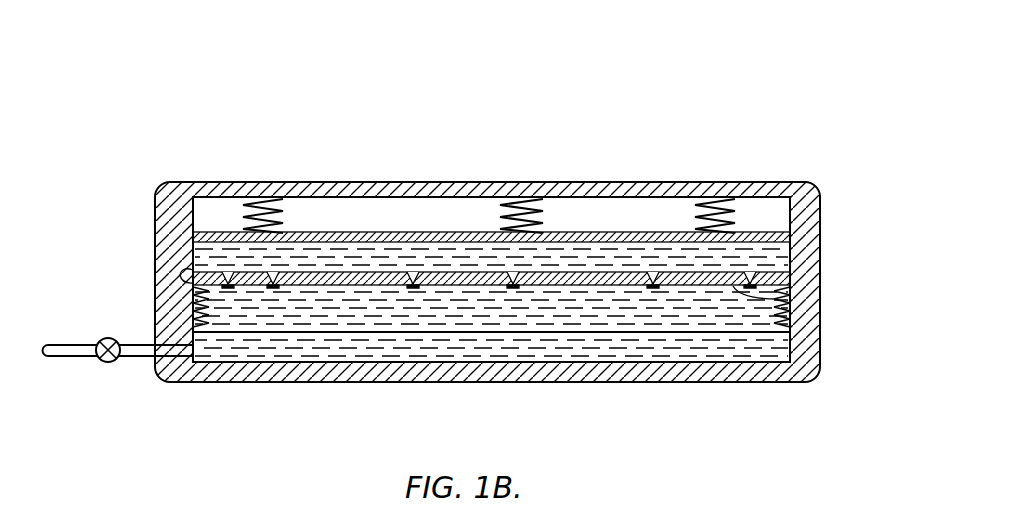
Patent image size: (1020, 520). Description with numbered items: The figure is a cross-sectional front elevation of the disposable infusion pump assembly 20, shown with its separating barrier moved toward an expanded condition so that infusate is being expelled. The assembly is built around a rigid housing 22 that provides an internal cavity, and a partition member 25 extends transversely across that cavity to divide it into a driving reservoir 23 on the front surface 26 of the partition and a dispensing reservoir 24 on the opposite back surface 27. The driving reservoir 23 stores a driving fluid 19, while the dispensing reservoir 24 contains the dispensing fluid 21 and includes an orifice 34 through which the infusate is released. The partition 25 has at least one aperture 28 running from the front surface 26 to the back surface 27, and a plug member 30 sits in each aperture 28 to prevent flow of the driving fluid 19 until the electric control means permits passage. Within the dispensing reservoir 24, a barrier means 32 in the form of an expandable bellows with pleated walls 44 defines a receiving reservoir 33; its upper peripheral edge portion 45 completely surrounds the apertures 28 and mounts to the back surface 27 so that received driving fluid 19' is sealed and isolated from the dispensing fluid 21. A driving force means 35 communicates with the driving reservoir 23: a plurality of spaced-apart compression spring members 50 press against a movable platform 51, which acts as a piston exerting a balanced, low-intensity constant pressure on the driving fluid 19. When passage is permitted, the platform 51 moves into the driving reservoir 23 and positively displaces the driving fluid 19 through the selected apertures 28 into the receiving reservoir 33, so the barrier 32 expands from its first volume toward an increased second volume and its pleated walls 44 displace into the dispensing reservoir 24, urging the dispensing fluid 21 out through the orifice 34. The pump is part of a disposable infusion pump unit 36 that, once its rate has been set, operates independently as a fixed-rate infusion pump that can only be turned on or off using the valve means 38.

The disposable infusion pump assembly 20 is at (612, 72).
The rigid housing 22 is at (818, 194).
The driving reservoir 23 is at (570, 220).
The dispensing reservoir 24 is at (521, 350).
The partition member 25 is at (433, 285).
The front surface 26 is at (190, 272).
The back surface 27 is at (778, 301).
The aperture 28 is at (352, 272).
The plug member 30 is at (653, 288).
The barrier means 32 is at (420, 342).
The receiving reservoir 33 is at (378, 318).
The orifice 34 is at (140, 357).
The driving force means 35 is at (762, 233).
The disposable infusion pump unit 36 is at (130, 210).
The valve means 38 is at (103, 363).
The pleated walls 44 is at (778, 329).
The upper peripheral edge portion 45 is at (785, 276).
The compression spring members 50 is at (246, 210).
The platform 51 is at (670, 233).
The driving fluid 19 is at (491, 206).
The received driving fluid 19' is at (766, 368).
The dispensing fluid 21 is at (710, 352).